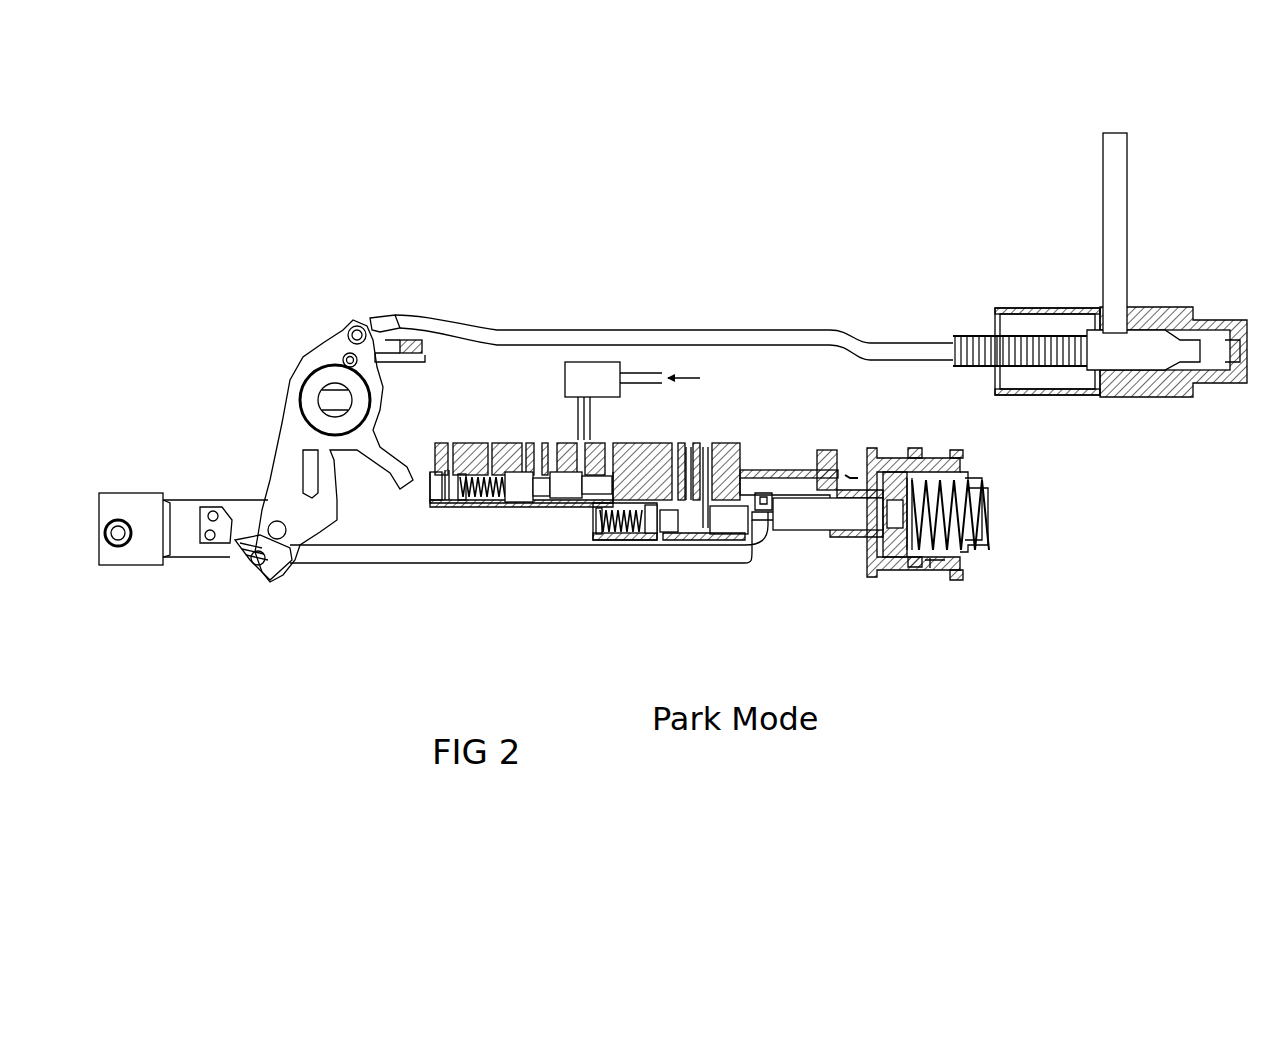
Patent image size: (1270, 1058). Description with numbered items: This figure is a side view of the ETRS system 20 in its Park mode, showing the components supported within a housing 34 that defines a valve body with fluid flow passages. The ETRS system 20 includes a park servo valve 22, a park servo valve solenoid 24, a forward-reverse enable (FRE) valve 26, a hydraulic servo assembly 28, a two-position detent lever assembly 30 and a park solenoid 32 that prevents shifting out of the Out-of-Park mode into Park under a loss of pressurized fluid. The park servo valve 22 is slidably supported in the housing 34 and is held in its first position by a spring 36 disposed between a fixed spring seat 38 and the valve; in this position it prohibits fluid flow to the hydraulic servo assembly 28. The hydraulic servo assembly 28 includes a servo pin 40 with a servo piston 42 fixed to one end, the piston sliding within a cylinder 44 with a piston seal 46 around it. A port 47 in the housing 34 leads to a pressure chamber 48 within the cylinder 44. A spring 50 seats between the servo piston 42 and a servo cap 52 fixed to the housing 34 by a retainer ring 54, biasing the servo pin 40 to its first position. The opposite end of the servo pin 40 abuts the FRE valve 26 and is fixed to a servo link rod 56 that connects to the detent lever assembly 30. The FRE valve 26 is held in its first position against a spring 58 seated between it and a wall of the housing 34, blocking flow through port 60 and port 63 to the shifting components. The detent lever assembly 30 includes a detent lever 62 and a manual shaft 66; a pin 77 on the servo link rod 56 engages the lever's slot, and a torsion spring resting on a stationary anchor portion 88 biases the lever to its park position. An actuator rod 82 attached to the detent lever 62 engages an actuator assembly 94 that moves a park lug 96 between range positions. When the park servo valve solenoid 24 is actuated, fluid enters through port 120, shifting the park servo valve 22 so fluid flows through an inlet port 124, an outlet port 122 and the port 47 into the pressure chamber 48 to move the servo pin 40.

The ETRS system 20 is at (770, 178).
The park servo valve 22 is at (512, 500).
The park servo valve solenoid 24 is at (565, 382).
The forward-reverse enable (FRE) valve 26 is at (688, 540).
The hydraulic servo assembly 28 is at (975, 470).
The two-position detent lever assembly 30 is at (262, 480).
The park solenoid 32 is at (180, 493).
The housing 34 is at (742, 468).
The spring 36 is at (462, 500).
The fixed spring seat 38 is at (428, 455).
The servo pin 40 is at (808, 530).
The servo piston 42 is at (905, 465).
The cylinder 44 is at (925, 555).
The piston seal 46 is at (888, 560).
The port 47 is at (866, 470).
The pressure chamber 48 is at (848, 470).
The spring 50 is at (978, 512).
The servo cap 52 is at (992, 490).
The retainer ring 54 is at (962, 556).
The servo link rod 56 is at (752, 565).
The spring 58 is at (622, 540).
The port 60 is at (700, 447).
The detent lever 62 is at (286, 422).
The port 63 is at (674, 447).
The manual shaft 66 is at (332, 399).
The pin 77 is at (270, 580).
The actuator rod 82 is at (548, 330).
The stationary anchor portion 88 is at (428, 352).
The actuator assembly 94 is at (1055, 306).
The park lug 96 is at (1128, 205).
The port 120 is at (588, 440).
The outlet port 122 is at (536, 445).
The inlet port 124 is at (520, 445).